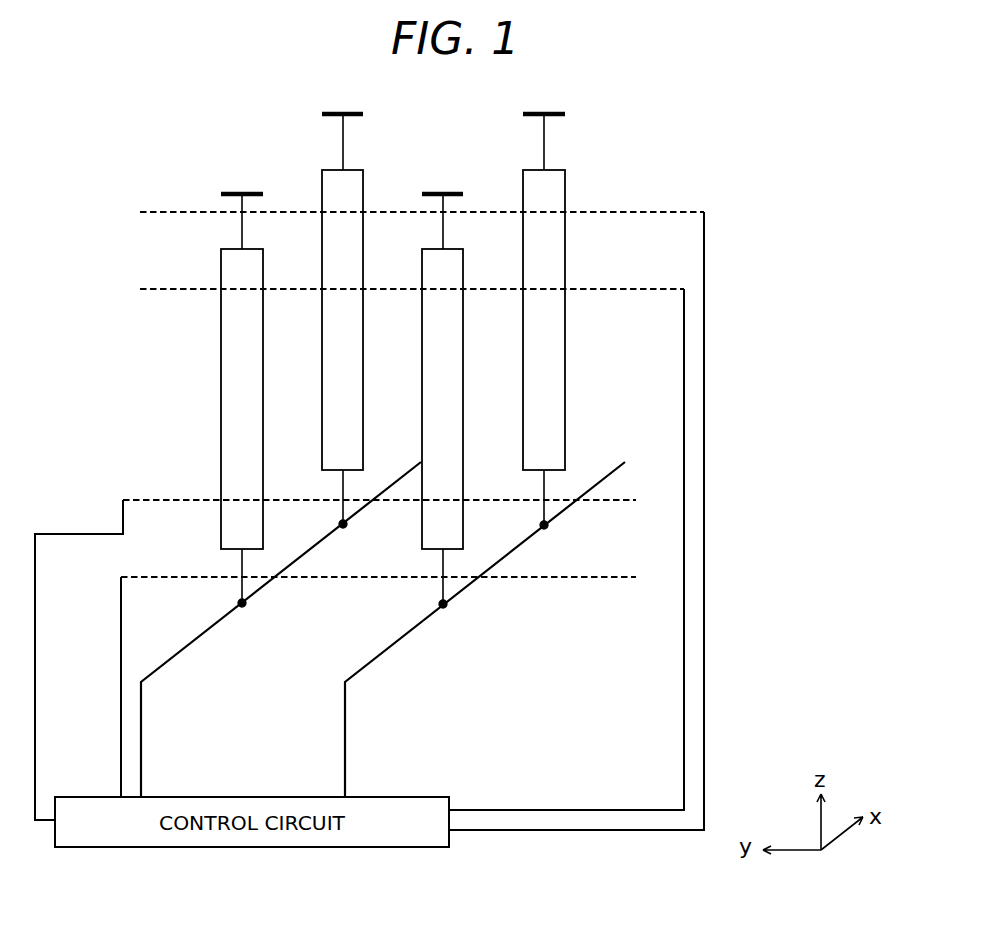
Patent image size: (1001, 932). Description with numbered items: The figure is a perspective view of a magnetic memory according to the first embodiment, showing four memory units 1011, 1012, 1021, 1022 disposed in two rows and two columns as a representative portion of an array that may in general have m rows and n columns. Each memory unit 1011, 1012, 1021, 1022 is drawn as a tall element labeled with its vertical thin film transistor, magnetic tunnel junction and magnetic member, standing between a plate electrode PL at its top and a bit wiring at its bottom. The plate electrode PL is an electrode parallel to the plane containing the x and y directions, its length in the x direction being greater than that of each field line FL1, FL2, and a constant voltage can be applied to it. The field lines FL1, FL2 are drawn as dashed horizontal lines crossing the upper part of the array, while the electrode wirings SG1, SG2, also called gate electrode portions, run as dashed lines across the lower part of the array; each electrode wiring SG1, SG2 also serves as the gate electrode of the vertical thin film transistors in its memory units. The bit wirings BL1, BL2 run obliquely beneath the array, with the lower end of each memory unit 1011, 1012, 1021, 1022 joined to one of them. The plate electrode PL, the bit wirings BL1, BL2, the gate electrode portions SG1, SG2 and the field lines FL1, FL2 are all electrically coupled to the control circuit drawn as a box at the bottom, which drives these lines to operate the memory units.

The memory unit 1011 is at (290, 341).
The memory unit 1012 is at (390, 341).
The memory unit 1021 is at (490, 341).
The memory unit 1022 is at (592, 341).
The plate electrode PL is at (393, 167).
The field line FL1 is at (389, 543).
The field line FL2 is at (399, 513).
The electrode wiring (gate electrode portion) SG1 is at (349, 681).
The electrode wiring (gate electrode portion) SG2 is at (335, 653).
The bit wiring BL1 is at (188, 640).
The bit wiring BL2 is at (391, 640).